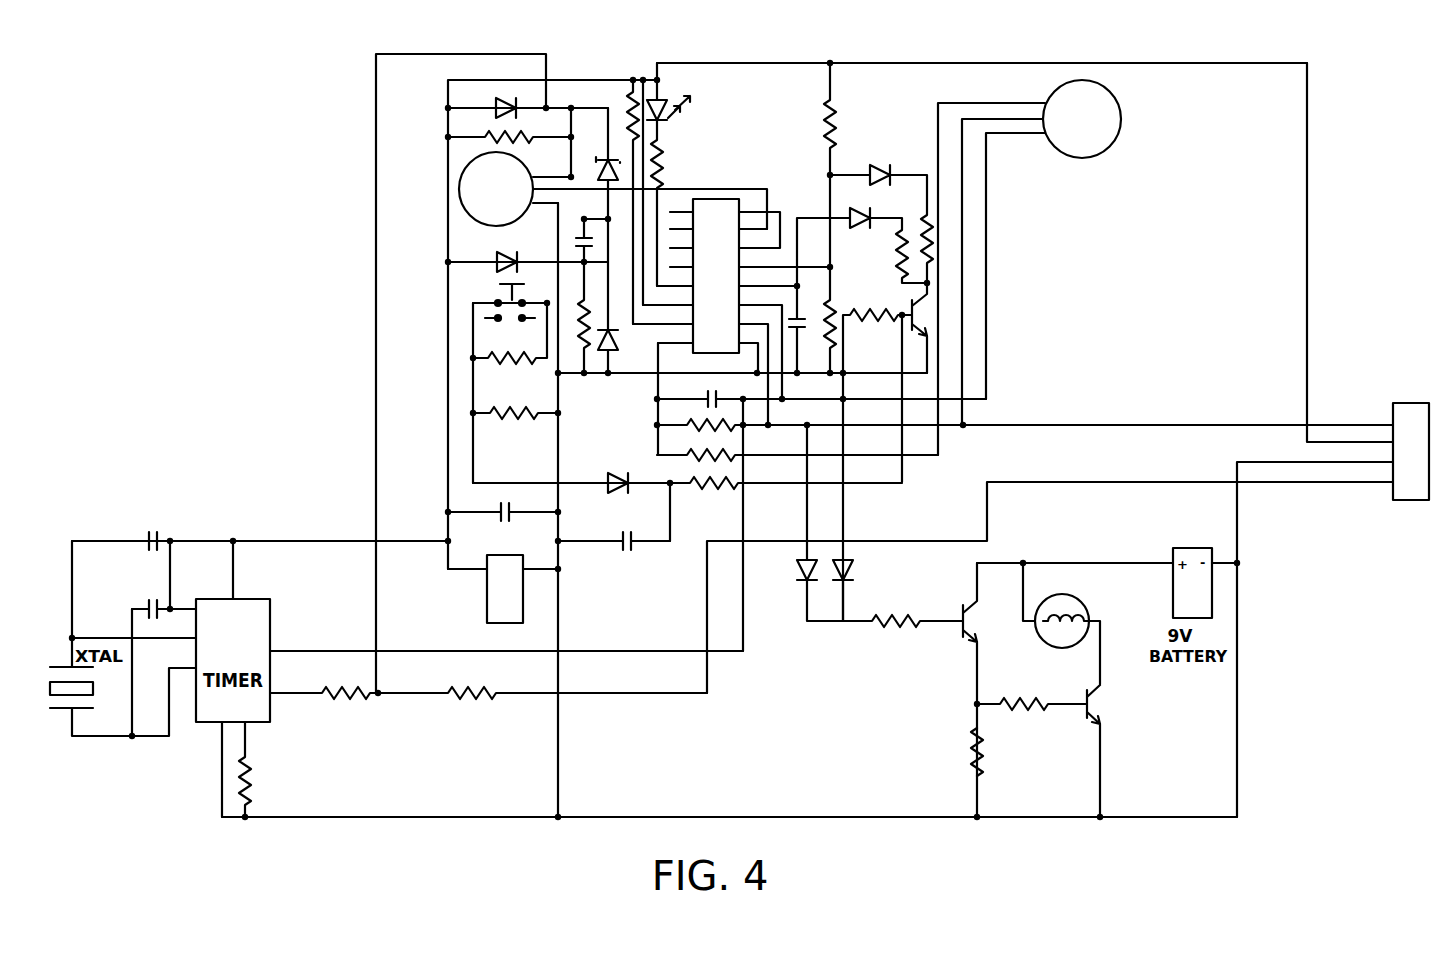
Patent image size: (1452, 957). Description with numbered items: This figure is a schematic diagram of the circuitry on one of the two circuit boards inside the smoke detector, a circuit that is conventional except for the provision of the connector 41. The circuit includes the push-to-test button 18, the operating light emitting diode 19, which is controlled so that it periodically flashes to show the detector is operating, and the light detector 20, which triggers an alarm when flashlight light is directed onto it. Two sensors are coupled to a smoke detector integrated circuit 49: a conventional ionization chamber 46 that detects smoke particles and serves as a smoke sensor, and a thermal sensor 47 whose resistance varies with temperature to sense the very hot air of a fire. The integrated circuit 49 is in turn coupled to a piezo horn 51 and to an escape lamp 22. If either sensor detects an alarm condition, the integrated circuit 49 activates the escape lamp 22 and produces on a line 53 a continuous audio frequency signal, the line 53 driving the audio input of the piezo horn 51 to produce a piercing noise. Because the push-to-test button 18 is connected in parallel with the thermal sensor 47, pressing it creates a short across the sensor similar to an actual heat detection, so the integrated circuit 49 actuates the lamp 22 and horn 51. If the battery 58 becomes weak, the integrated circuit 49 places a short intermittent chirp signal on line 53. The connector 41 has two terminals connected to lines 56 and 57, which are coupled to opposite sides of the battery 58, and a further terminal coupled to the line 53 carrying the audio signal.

The push-to-test button 18 is at (514, 300).
The operating light emitting diode 19 is at (662, 108).
The light detector 20 is at (604, 168).
The escape lamp 22 is at (1080, 601).
The connector 41 is at (1413, 405).
The ionization chamber 46 is at (460, 188).
The thermal sensor 47 is at (490, 360).
The smoke detector integrated circuit 49 is at (714, 200).
The piezo horn 51 is at (1118, 112).
The line 53 is at (988, 292).
The line 56 is at (1307, 290).
The line 57 is at (1240, 714).
The battery 58 is at (495, 600).